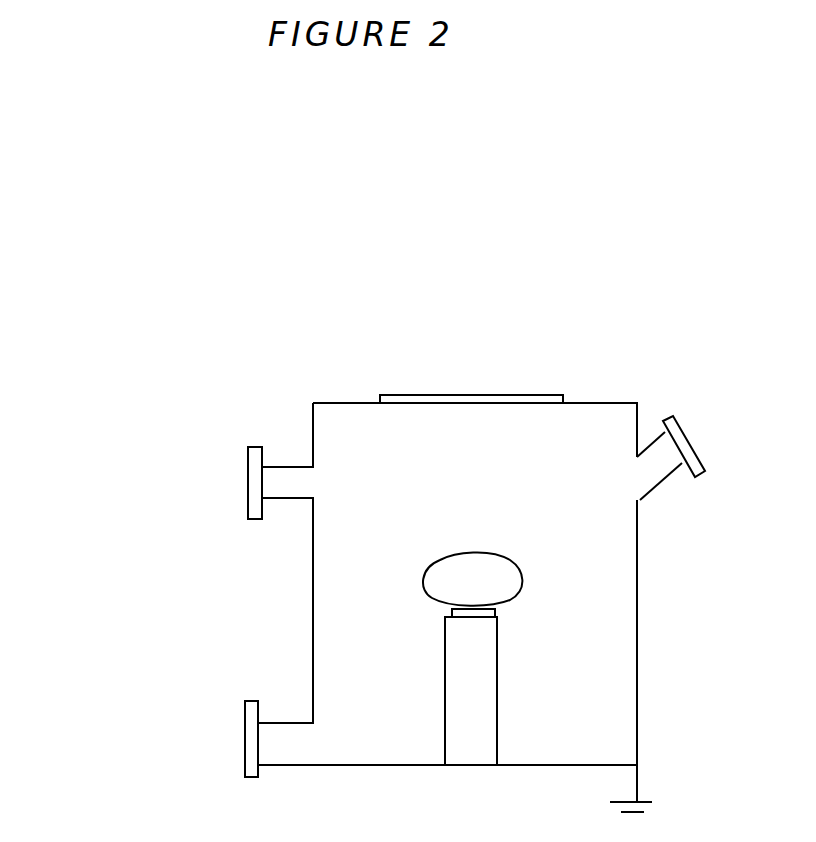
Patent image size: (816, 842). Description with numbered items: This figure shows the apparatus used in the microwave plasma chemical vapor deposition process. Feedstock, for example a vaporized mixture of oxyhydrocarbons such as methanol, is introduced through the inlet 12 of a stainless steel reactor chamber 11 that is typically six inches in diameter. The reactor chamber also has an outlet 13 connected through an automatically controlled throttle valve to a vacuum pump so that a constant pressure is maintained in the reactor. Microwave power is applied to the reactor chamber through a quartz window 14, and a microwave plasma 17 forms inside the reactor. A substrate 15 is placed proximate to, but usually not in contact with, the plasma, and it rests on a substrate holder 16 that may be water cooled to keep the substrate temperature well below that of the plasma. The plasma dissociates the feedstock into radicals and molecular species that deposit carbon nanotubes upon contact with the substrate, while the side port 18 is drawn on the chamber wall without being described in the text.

The reactor chamber 11 is at (652, 612).
The inlet 12 is at (248, 487).
The outlet 13 is at (245, 731).
The quartz window 14 is at (562, 400).
The substrate 15 is at (452, 610).
The substrate holder 16 is at (483, 705).
The microwave plasma 17 is at (440, 567).
The side port 18 is at (671, 458).